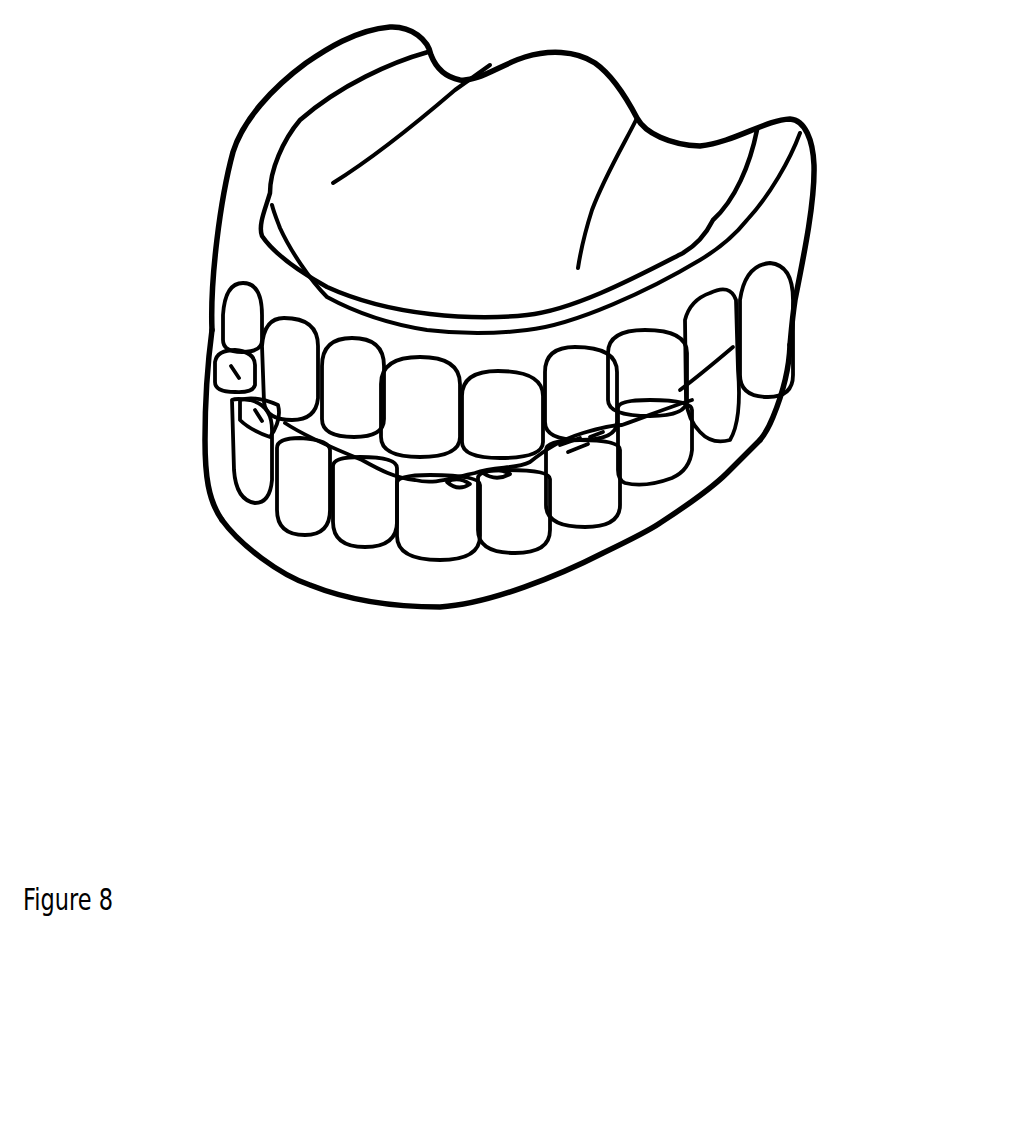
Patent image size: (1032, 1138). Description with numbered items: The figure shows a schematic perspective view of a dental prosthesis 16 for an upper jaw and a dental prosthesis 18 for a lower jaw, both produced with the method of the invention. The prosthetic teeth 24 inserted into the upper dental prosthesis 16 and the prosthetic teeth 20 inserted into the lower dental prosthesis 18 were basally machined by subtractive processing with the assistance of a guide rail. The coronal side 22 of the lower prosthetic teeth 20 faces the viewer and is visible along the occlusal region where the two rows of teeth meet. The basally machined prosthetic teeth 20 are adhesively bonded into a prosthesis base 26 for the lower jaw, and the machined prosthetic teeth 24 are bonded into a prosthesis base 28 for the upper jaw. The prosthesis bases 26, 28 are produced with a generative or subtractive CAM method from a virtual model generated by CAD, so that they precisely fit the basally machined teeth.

The dental prosthesis for an upper jaw 16 is at (160, 132).
The dental prosthesis for a lower jaw 18 is at (208, 605).
The prosthetic teeth for the lower jaw 20 is at (637, 450).
The coronal side 22 is at (387, 473).
The prosthetic teeth for the upper jaw 24 is at (333, 395).
The prosthesis base for the lower jaw 26 is at (362, 573).
The prosthesis base for the upper jaw 28 is at (747, 233).